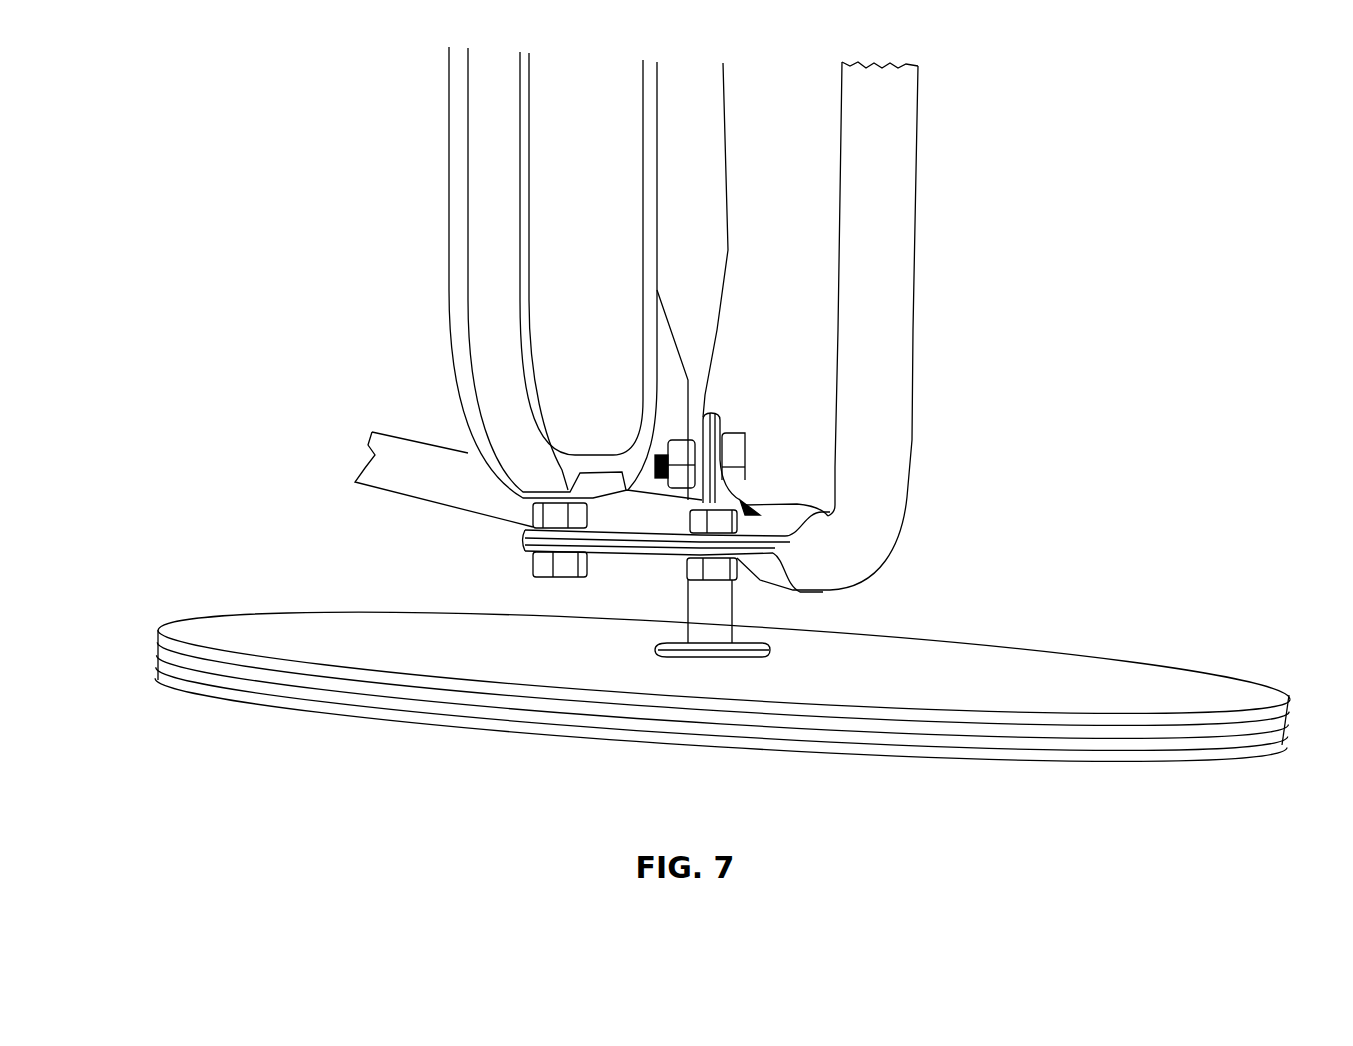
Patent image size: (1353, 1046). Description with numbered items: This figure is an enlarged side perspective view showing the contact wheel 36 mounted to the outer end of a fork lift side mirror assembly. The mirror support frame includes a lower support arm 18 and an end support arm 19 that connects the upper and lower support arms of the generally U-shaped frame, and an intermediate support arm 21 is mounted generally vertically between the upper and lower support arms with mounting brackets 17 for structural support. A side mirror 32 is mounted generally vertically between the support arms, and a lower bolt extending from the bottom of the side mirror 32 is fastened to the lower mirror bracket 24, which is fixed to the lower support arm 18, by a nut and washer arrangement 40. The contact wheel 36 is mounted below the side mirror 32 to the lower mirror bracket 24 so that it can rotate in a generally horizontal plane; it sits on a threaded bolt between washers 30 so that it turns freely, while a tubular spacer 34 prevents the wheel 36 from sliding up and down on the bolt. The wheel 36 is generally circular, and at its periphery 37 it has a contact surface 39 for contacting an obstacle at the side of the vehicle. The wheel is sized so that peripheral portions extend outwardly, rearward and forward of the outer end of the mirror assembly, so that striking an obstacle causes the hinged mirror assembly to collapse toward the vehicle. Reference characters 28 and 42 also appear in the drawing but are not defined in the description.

The mounting brackets 17 is at (718, 423).
The lower support arm 18 is at (427, 477).
The end support arm 19 is at (885, 280).
The intermediate support arm 21 is at (705, 270).
The lower mirror bracket 24 is at (803, 510).
The connecting portion 28 is at (765, 505).
The washers 30 is at (653, 643).
The side mirror 32 is at (493, 303).
The tubular spacer 34 is at (715, 607).
The contact wheel 36 is at (998, 665).
The periphery 37 is at (160, 632).
The contact surface 39 is at (160, 665).
The nut and washer arrangement 40 is at (500, 566).
The outer wall 42 is at (449, 172).